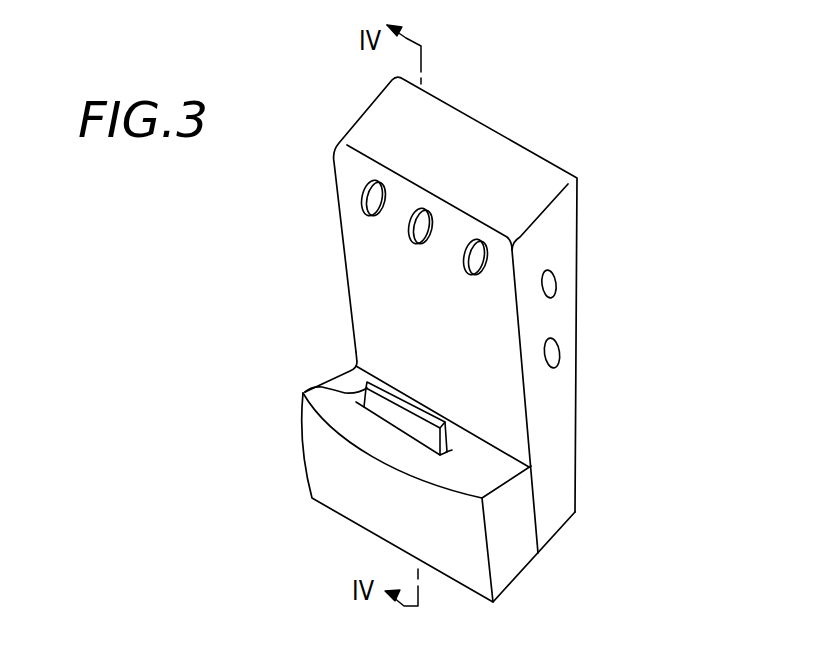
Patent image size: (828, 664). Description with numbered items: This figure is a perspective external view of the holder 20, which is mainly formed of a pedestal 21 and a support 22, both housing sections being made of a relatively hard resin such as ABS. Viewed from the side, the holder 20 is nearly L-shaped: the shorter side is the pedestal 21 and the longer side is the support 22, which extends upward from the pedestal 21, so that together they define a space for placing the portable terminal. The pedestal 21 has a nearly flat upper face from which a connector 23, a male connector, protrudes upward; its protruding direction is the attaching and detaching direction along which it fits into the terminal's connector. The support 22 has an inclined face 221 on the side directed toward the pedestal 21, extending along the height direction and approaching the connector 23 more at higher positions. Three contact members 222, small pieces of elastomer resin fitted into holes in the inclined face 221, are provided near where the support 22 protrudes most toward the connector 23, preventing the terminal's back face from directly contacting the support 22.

The holder 20 is at (606, 254).
The pedestal 21 is at (512, 557).
The support 22 is at (558, 515).
The inclined face 221 is at (497, 400).
The contact members 222 is at (366, 203).
The connector 23 is at (335, 390).